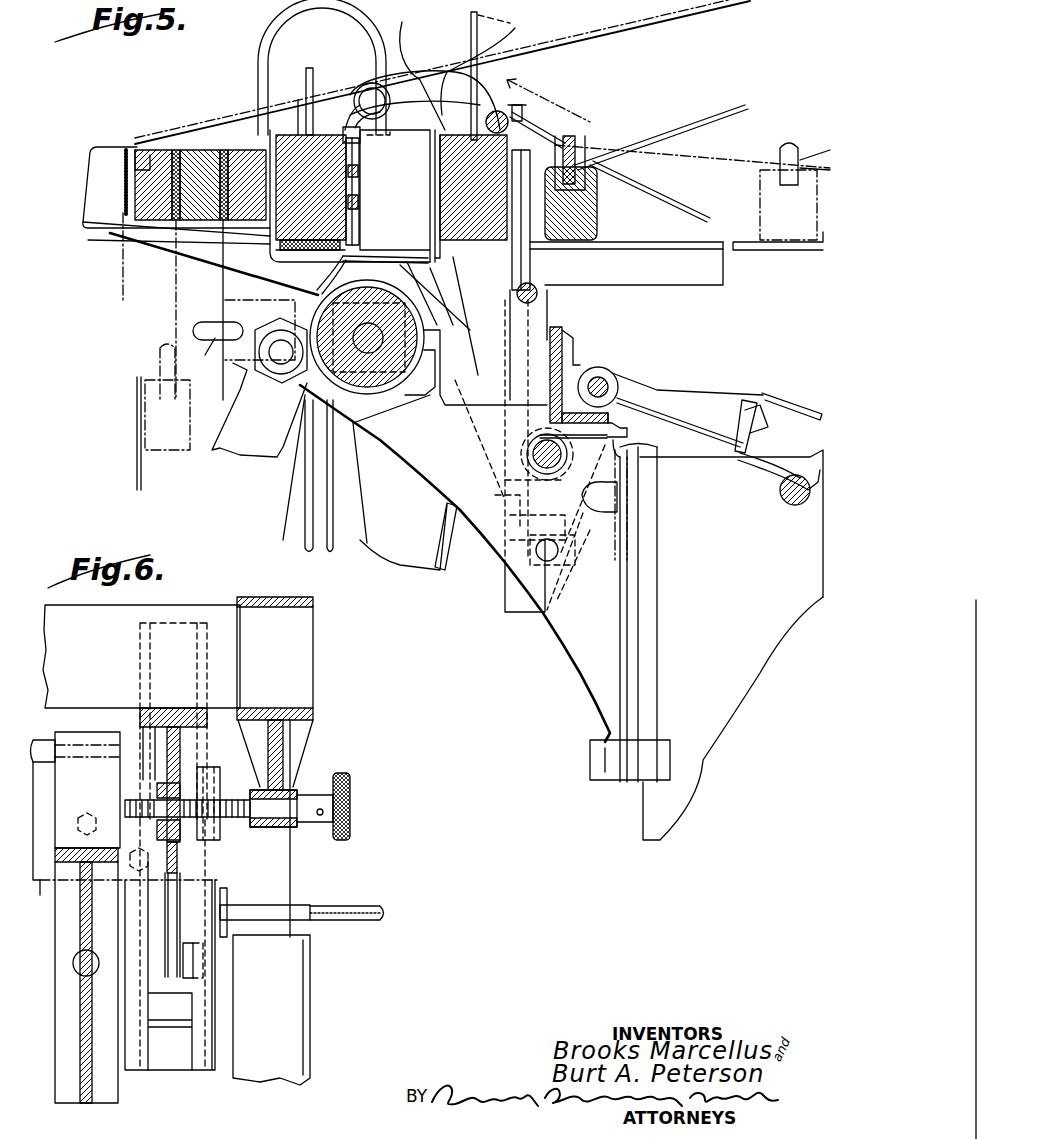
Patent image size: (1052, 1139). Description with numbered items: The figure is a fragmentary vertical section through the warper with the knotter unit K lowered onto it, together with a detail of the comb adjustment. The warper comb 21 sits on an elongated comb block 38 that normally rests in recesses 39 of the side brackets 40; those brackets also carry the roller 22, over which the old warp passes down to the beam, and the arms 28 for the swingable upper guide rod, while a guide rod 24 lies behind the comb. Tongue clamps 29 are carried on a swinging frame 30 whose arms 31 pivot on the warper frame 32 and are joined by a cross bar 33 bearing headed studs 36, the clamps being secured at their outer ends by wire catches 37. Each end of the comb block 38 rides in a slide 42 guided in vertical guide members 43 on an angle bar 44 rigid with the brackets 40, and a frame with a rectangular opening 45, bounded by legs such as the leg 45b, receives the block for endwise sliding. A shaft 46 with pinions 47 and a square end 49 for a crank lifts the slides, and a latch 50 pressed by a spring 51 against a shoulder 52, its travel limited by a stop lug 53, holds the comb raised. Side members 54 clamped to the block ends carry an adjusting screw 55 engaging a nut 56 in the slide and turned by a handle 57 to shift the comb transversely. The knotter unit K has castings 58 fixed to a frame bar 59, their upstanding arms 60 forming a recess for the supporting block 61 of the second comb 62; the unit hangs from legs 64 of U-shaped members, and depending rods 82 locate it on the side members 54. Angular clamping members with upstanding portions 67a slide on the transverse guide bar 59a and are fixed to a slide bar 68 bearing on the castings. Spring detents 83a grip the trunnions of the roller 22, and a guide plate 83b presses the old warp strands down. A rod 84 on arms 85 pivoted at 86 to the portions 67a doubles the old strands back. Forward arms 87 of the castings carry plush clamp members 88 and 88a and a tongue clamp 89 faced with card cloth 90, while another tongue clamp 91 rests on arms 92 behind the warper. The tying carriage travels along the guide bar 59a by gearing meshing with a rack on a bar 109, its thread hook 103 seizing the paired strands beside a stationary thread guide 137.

In FIG. 5, the knotter unit K is at (134, 140).
In FIG. 5, the warper comb 21 is at (487, 65).
In FIG. 5, the roller 22 is at (375, 392).
In FIG. 5, the guide rod 24 is at (540, 290).
In FIG. 6, the guide rod 24 is at (50, 745).
In FIG. 5, the arms 28 is at (250, 440).
In FIG. 5, the tongue clamps 29 is at (228, 363).
In FIG. 5, the swinging frame 30 is at (730, 380).
In FIG. 5, the arms 31 is at (696, 395).
In FIG. 5, the warper frame 32 is at (606, 370).
In FIG. 5, the cross bar 33 is at (765, 448).
In FIG. 5, the headed studs 36 is at (760, 430).
In FIG. 5, the wire catches 37 is at (805, 405).
In FIG. 5, the comb block 38 is at (528, 72).
In FIG. 6, the comb block 38 is at (110, 625).
In FIG. 5, the recesses 39 is at (452, 392).
In FIG. 6, the recesses 39 is at (126, 813).
In FIG. 5, the side brackets 40 is at (440, 485).
In FIG. 6, the side brackets 40 is at (60, 927).
In FIG. 5, the slides 42 is at (530, 255).
In FIG. 6, the slides 42 is at (155, 750).
In FIG. 5, the vertical guide members 43 is at (510, 605).
In FIG. 6, the vertical guide members 43 is at (212, 775).
In FIG. 5, the angle bar 44 is at (566, 330).
In FIG. 6, the angle bar 44 is at (71, 881).
In FIG. 5, the rectangular openings 45 is at (475, 240).
In FIG. 6, the rectangular openings 45 is at (168, 708).
In FIG. 5, the leg 45b is at (474, 135).
In FIG. 5, the shaft 46 is at (568, 458).
In FIG. 6, the shaft 46 is at (303, 905).
In FIG. 5, the pinions 47 is at (587, 505).
In FIG. 6, the square projecting end 49 is at (368, 905).
In FIG. 5, the latch 50 is at (500, 496).
In FIG. 6, the latch 50 is at (190, 960).
In FIG. 5, the spring 51 is at (640, 512).
In FIG. 5, the shoulder 52 is at (500, 475).
In FIG. 6, the shoulder 52 is at (195, 945).
In FIG. 5, the stop lug 53 is at (582, 562).
In FIG. 5, the side members 54 is at (444, 552).
In FIG. 6, the side members 54 is at (300, 740).
In FIG. 6, the adjusting screw 55 is at (285, 795).
In FIG. 6, the nut 56 is at (157, 793).
In FIG. 6, the handle 57 is at (342, 775).
In FIG. 5, the castings 58 is at (288, 278).
In FIG. 5, the frame bar 59 is at (266, 245).
In FIG. 5, the transverse guide bar 59a is at (360, 152).
In FIG. 5, the upstanding arms 60 is at (272, 172).
In FIG. 5, the supporting block 61 is at (298, 128).
In FIG. 5, the second comb 62 is at (309, 70).
In FIG. 5, the legs 64 is at (258, 52).
In FIG. 5, the upstanding portions 67a is at (352, 126).
In FIG. 5, the slide bar 68 is at (362, 226).
In FIG. 5, the depending rods 82 is at (316, 540).
In FIG. 5, the spring detents 83a is at (345, 276).
In FIG. 5, the guide plate 83b is at (448, 304).
In FIG. 5, the rod 84 is at (530, 112).
In FIG. 5, the arms 85 is at (432, 74).
In FIG. 5, the pivot 86 is at (373, 88).
In FIG. 5, the arms 87 is at (103, 235).
In FIG. 5, the plush clamp member 88 is at (245, 148).
In FIG. 5, the plush clamp member 88a is at (207, 148).
In FIG. 5, the tongue clamp 89 is at (150, 192).
In FIG. 5, the card cloth 90 is at (130, 160).
In FIG. 5, the tongue clamp 91 is at (597, 205).
In FIG. 5, the arms 92 is at (670, 240).
In FIG. 5, the thread hook 103 is at (422, 71).
In FIG. 5, the bar 109 is at (346, 200).
In FIG. 5, the thread guide 137 is at (396, 136).